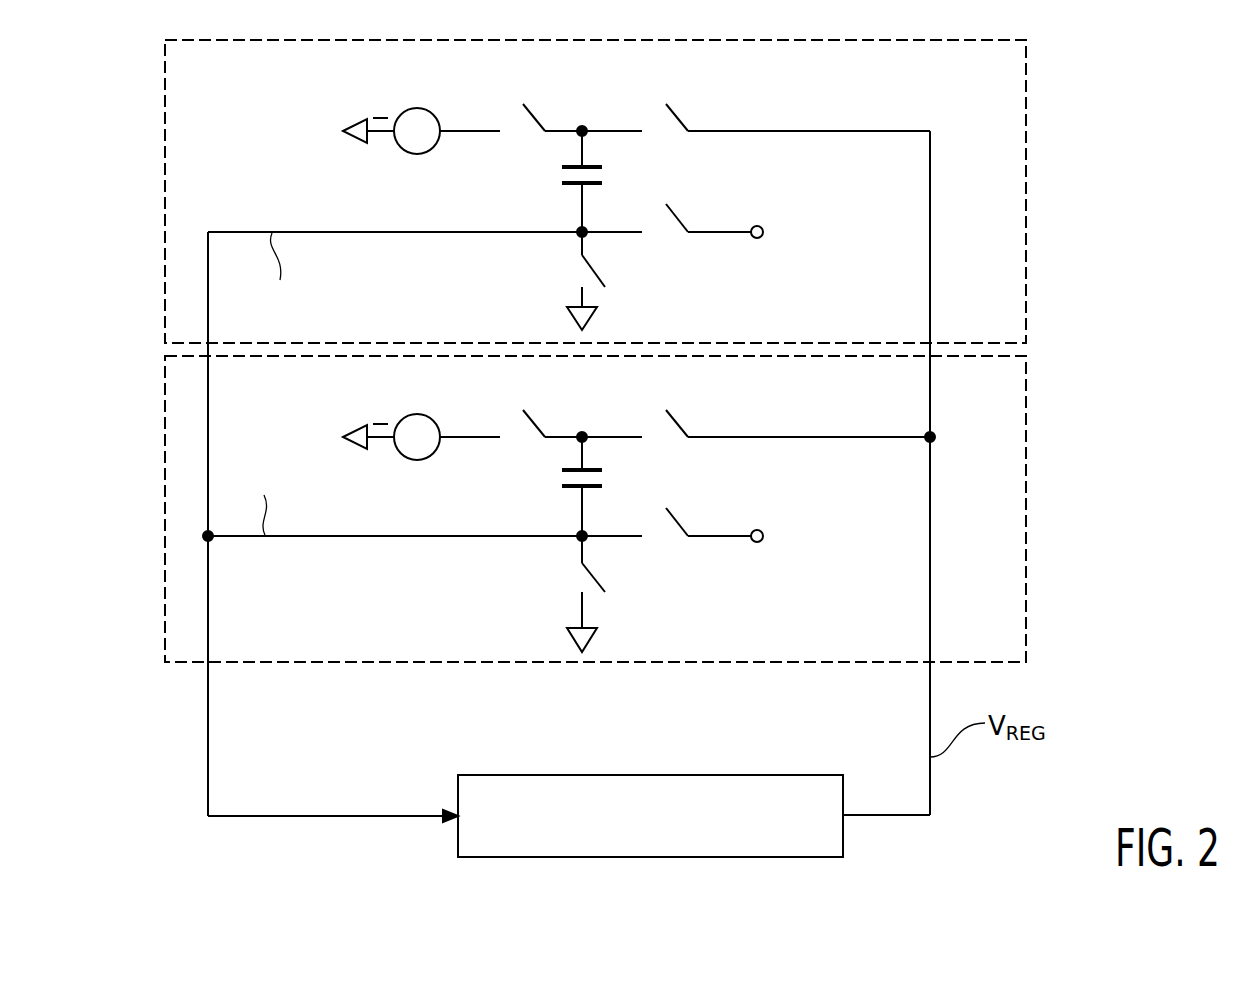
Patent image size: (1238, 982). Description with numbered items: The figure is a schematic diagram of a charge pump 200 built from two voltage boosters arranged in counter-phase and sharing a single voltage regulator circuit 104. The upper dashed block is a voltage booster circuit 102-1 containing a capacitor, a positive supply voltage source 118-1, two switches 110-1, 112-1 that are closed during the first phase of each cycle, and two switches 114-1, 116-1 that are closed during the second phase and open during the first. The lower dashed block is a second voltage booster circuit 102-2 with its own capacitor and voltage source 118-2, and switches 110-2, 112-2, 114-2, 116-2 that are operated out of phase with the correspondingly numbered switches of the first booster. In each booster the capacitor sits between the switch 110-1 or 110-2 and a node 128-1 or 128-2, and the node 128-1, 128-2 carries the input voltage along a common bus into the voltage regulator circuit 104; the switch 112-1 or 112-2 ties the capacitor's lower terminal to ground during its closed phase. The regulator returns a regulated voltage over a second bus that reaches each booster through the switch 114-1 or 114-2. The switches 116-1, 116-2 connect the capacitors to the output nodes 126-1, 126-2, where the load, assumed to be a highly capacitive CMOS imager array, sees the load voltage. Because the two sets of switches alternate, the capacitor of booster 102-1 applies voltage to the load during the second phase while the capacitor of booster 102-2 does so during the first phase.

The charge pump 200 is at (1208, 98).
The voltage booster circuit 102-1 is at (1027, 186).
The second voltage booster circuit 102-2 is at (1027, 519).
The voltage regulator circuit 104 is at (843, 842).
The switch 110-1 is at (529, 113).
The switch 110-2 is at (529, 420).
The switch 112-1 is at (592, 273).
The switch 112-2 is at (592, 578).
The switch 114-1 is at (672, 113).
The switch 114-2 is at (672, 420).
The switch 116-1 is at (680, 234).
The switch 116-2 is at (680, 538).
The supply voltage source 118-1 is at (412, 154).
The voltage source 118-2 is at (410, 459).
The output node 126-1 is at (762, 236).
The output node 126-2 is at (762, 540).
The node 128-1 is at (577, 237).
The node 128-2 is at (578, 536).